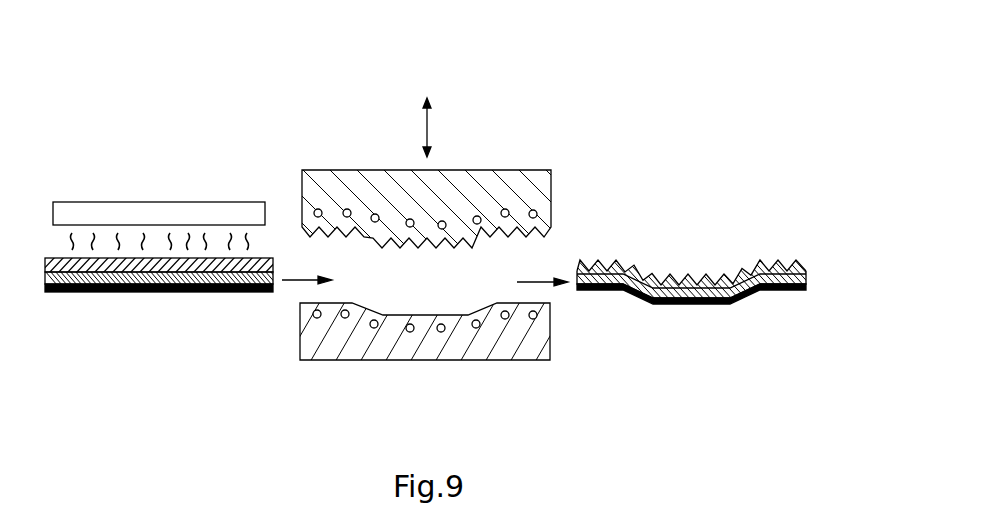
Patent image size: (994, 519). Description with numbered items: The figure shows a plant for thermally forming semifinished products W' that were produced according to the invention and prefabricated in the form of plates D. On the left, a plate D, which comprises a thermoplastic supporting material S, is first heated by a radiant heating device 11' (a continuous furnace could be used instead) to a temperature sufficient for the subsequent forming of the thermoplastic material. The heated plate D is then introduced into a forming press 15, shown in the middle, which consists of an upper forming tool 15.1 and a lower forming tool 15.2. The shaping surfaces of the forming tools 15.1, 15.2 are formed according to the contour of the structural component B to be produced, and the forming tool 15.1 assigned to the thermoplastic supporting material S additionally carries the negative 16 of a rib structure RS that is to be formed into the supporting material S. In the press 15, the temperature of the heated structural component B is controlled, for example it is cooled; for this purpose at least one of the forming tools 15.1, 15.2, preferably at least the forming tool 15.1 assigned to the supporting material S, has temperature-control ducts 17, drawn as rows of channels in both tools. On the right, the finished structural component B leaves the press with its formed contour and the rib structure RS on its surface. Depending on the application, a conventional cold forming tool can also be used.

The radiant heating device 11' is at (159, 197).
The thermoplastic supporting material S is at (265, 265).
The plate D is at (127, 290).
The semifinished product W' is at (180, 341).
The forming press 15 is at (474, 124).
The forming tool 15.1 is at (335, 178).
The forming tool 15.2 is at (323, 350).
The negative of a rib structure 16 is at (492, 236).
The temperature-control ducts 17 is at (410, 219).
The structural component B is at (693, 239).
The rib structure RS is at (757, 276).